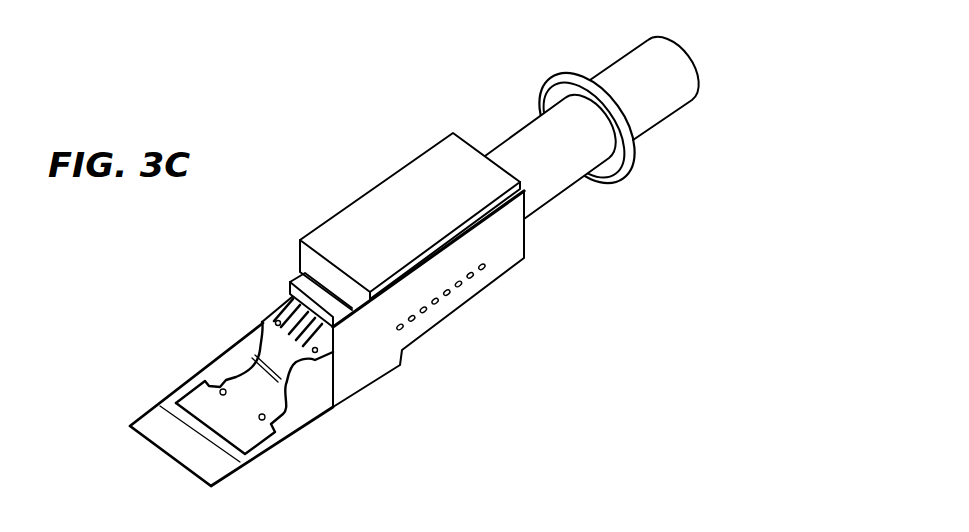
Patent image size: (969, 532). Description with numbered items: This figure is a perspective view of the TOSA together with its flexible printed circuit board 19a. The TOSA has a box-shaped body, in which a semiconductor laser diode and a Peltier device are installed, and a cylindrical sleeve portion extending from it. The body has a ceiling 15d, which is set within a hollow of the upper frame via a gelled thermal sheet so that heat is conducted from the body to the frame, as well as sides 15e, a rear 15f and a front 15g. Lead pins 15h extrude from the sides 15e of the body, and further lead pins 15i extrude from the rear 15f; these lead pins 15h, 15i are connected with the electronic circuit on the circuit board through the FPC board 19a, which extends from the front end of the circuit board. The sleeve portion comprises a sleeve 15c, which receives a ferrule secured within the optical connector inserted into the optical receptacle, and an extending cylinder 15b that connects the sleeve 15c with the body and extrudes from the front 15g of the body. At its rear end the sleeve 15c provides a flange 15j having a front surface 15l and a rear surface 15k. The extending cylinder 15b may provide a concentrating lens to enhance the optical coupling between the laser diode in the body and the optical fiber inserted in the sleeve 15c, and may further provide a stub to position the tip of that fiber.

The extending cylinder 15b is at (622, 193).
The sleeve 15c is at (710, 117).
The ceiling 15d is at (410, 190).
The sides 15e is at (450, 299).
The rear 15f is at (307, 256).
The front 15g is at (462, 140).
The lead pins 15h is at (448, 293).
The lead pins 15i is at (283, 307).
The flange 15j is at (550, 92).
The rear surface of flange 15k is at (556, 102).
The front surface of flange 15l is at (585, 73).
The flexible printed circuit board 19a is at (303, 408).